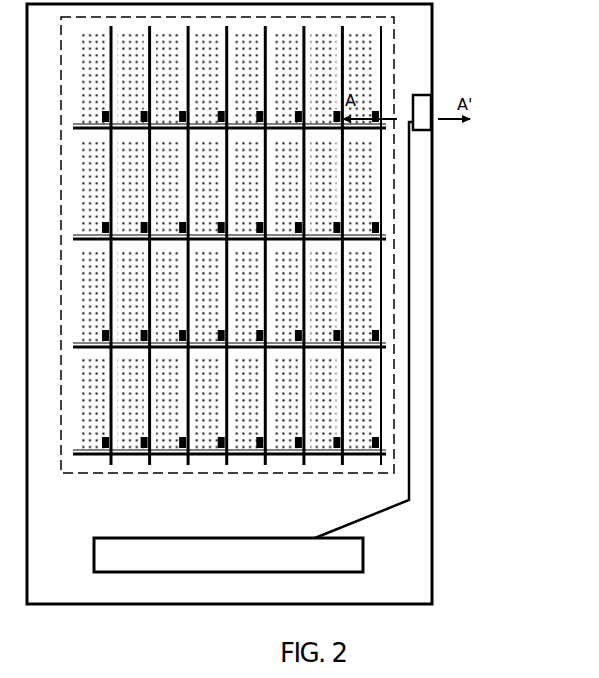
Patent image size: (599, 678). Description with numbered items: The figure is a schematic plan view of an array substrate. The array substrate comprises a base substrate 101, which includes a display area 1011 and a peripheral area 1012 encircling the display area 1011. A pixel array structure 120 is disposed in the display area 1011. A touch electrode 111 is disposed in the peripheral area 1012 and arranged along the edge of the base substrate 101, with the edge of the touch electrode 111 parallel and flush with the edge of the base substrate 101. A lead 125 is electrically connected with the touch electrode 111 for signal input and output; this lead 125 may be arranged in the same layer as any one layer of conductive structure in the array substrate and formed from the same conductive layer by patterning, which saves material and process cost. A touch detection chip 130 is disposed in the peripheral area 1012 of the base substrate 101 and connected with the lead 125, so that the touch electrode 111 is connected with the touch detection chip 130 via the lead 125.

The base substrate 101 is at (289, 304).
The display area 1011 is at (311, 245).
The peripheral area 1012 is at (491, 429).
The touch electrode 111 is at (482, 92).
The pixel array structure 120 is at (312, 245).
The lead 125 is at (433, 330).
The touch detection chip 130 is at (323, 512).